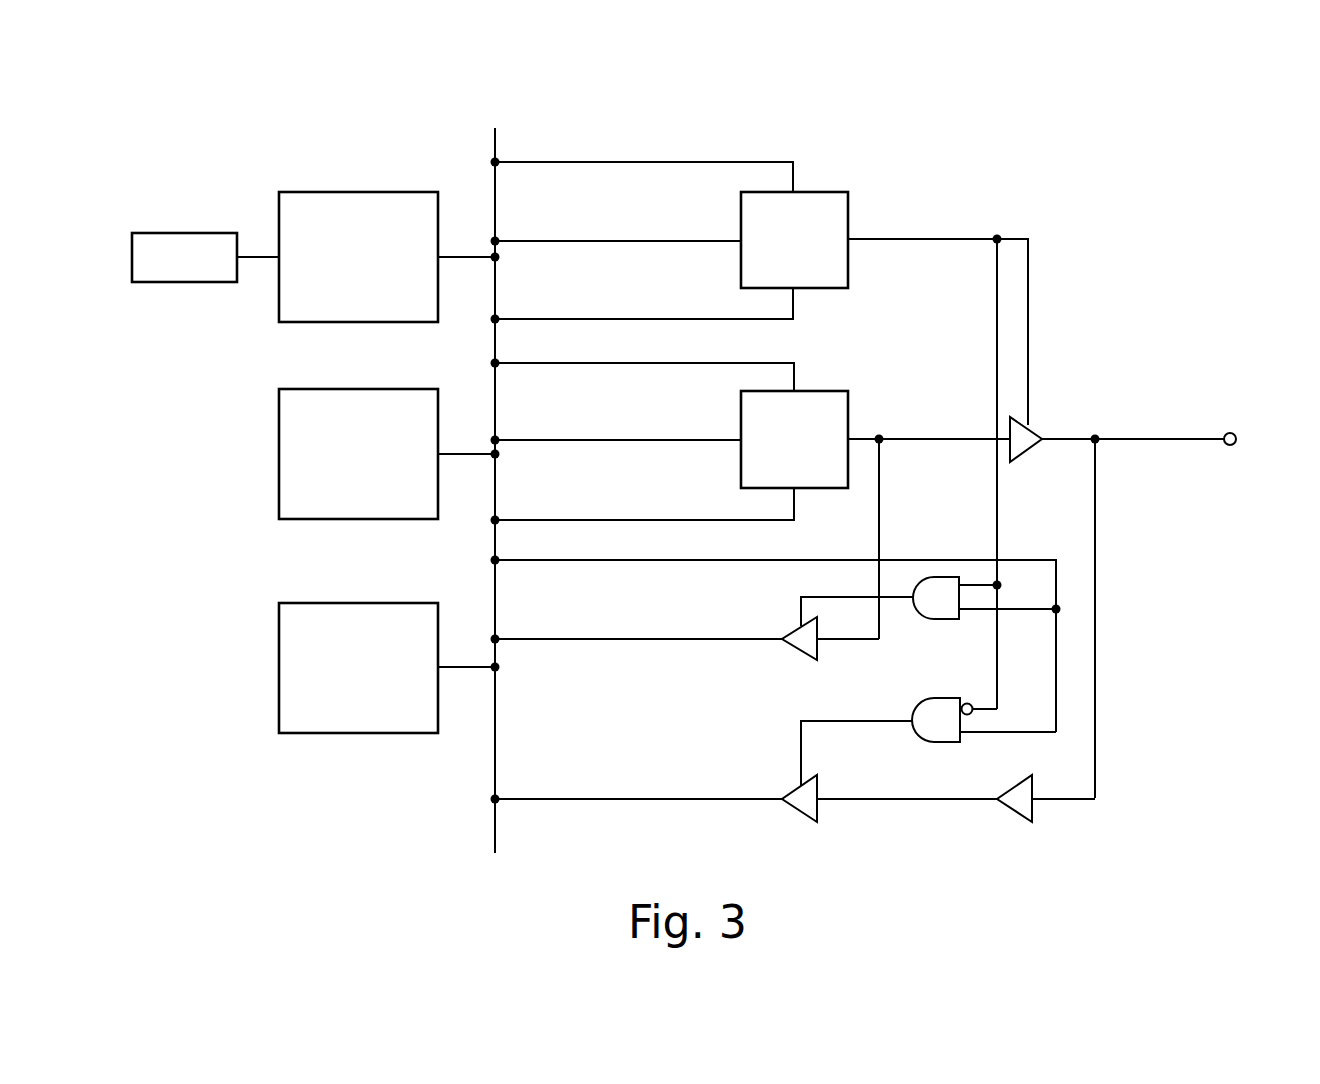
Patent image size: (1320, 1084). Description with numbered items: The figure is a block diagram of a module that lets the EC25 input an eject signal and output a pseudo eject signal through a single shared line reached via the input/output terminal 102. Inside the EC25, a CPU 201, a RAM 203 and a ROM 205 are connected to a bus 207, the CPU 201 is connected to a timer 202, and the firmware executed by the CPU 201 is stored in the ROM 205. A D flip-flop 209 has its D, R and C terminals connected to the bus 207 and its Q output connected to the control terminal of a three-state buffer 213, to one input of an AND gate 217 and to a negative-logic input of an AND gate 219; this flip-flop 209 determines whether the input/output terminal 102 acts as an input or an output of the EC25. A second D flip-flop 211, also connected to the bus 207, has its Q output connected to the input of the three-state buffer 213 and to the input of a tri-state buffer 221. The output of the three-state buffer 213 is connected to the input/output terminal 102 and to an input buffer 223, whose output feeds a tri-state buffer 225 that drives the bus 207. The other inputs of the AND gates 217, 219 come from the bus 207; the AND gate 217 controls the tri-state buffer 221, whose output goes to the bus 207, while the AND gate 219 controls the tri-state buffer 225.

The input/output terminal 102 is at (1233, 433).
The CPU 201 is at (418, 192).
The timer 202 is at (230, 233).
The RAM 203 is at (418, 389).
The ROM 205 is at (418, 603).
The bus 207 is at (495, 134).
The D flip-flop 209 is at (835, 192).
The D flip-flop 211 is at (835, 391).
The three-state buffer 213 is at (1037, 421).
The AND gate 217 is at (933, 619).
The AND gate 219 is at (913, 742).
The tri-state buffer 221 is at (800, 650).
The input buffer 223 is at (1015, 811).
The tri-state buffer 225 is at (800, 811).
The EC EC25 is at (1033, 109).